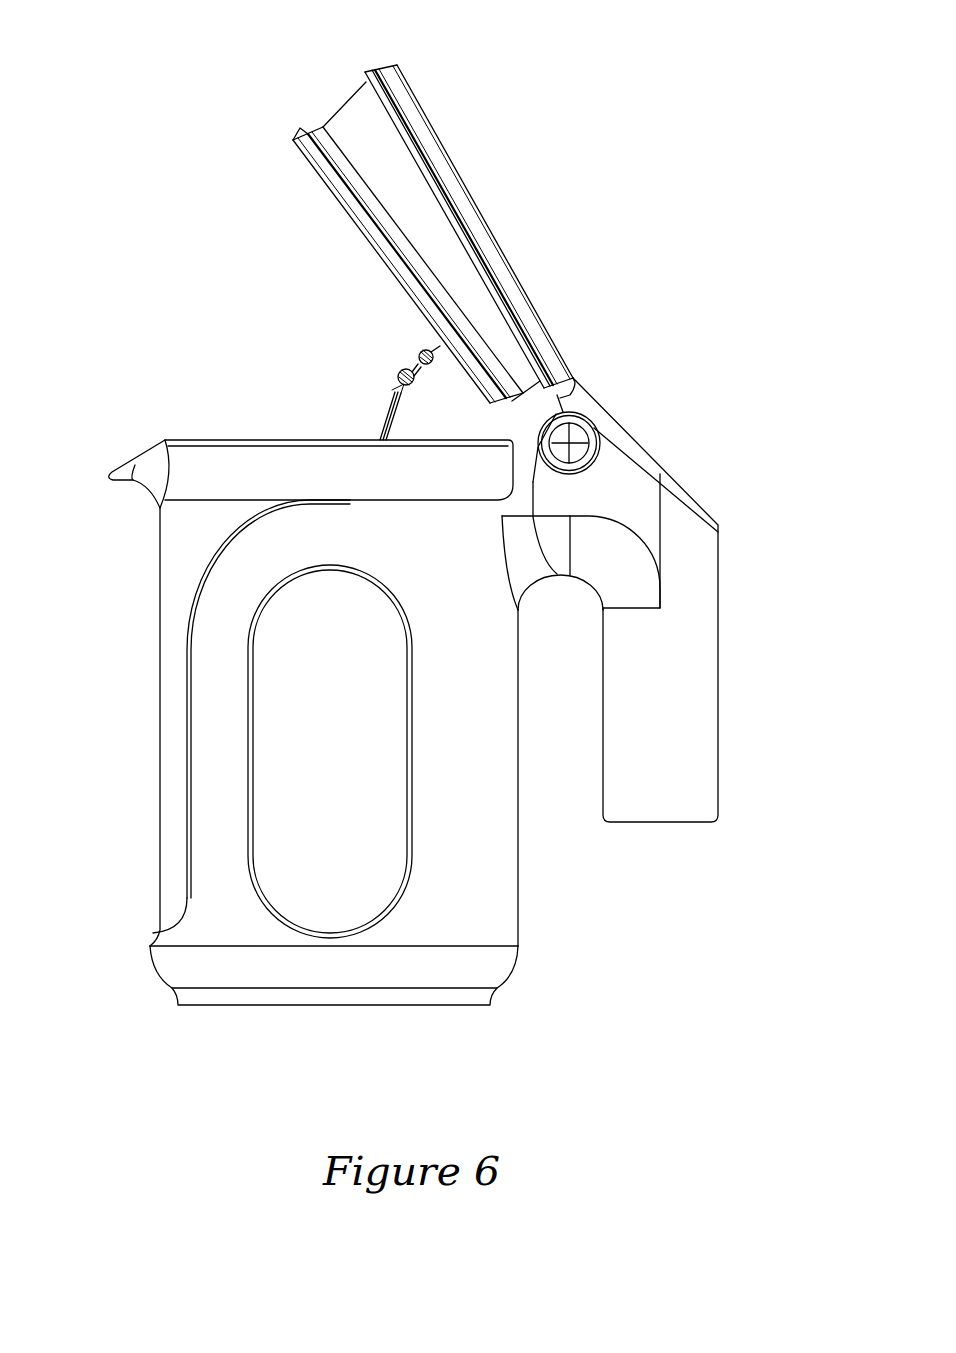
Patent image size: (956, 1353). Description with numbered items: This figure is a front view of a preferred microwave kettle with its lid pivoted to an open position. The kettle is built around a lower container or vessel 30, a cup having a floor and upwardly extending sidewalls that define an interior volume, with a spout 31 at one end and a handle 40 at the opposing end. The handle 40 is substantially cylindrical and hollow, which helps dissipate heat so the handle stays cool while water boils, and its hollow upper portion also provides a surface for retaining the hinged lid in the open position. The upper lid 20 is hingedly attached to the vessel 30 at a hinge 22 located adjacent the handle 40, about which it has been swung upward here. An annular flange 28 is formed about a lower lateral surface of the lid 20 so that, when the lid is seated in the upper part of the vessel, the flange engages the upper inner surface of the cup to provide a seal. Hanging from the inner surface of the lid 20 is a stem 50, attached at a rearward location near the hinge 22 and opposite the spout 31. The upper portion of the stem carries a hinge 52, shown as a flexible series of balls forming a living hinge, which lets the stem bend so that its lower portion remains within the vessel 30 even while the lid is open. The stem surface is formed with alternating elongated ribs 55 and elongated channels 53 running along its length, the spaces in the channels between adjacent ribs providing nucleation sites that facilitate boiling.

The lid 20 is at (385, 234).
The hinge 22 is at (600, 432).
The annular flange 28 is at (300, 130).
The vessel 30 is at (205, 732).
The spout 31 is at (127, 484).
The handle 40 is at (698, 707).
The stem 50 is at (363, 363).
The hinge 52 is at (413, 353).
The elongated channels 53 is at (380, 432).
The elongated ribs 55 is at (398, 382).